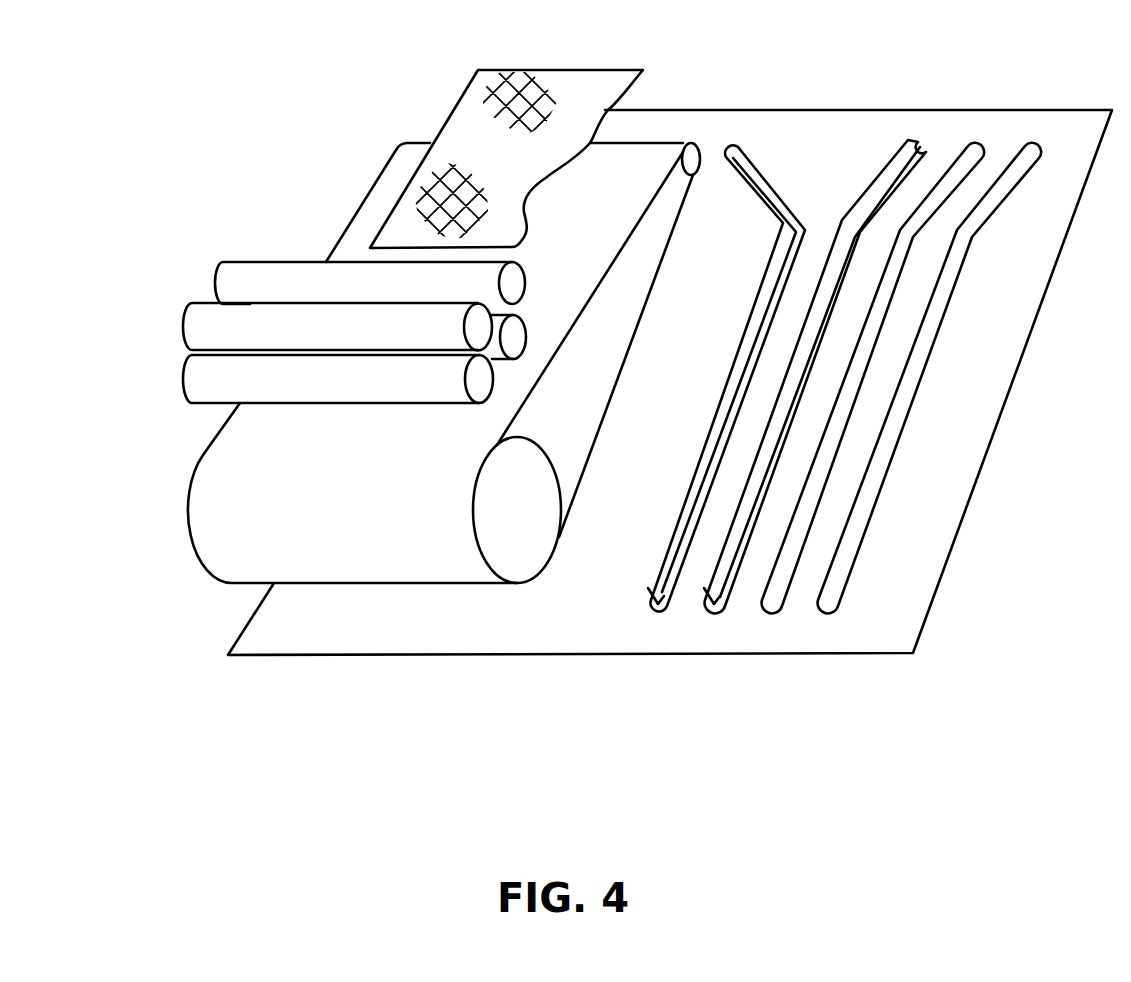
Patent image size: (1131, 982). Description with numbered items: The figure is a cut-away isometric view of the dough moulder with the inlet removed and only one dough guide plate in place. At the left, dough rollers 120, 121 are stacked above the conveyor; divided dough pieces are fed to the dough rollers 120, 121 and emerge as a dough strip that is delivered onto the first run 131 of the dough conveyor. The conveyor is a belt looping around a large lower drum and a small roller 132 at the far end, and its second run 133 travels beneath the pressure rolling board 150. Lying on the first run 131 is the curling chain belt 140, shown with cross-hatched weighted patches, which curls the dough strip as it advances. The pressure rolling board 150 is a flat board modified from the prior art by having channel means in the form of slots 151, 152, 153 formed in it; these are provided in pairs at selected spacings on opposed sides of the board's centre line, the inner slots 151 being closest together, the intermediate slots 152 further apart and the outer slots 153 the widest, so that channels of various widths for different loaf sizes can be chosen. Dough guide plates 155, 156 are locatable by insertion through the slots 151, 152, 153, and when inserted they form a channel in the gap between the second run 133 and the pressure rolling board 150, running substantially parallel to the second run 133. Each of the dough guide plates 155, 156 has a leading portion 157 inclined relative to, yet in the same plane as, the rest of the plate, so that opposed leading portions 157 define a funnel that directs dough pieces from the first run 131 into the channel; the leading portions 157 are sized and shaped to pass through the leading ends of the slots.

The dough roller 120 is at (516, 283).
The dough roller 121 is at (520, 335).
The first run 131 is at (577, 214).
The belt roller 132 is at (693, 157).
The second run 133 is at (660, 273).
The curling chain belt 140 is at (568, 100).
The pressure rolling board 150 is at (1057, 170).
The inner slot 151 is at (662, 610).
The intermediate slot 152 is at (777, 609).
The outer slot 153 is at (831, 609).
The dough guide plate 155 is at (650, 585).
The dough guide plate 156 is at (716, 585).
The leading portion 157 is at (751, 170).